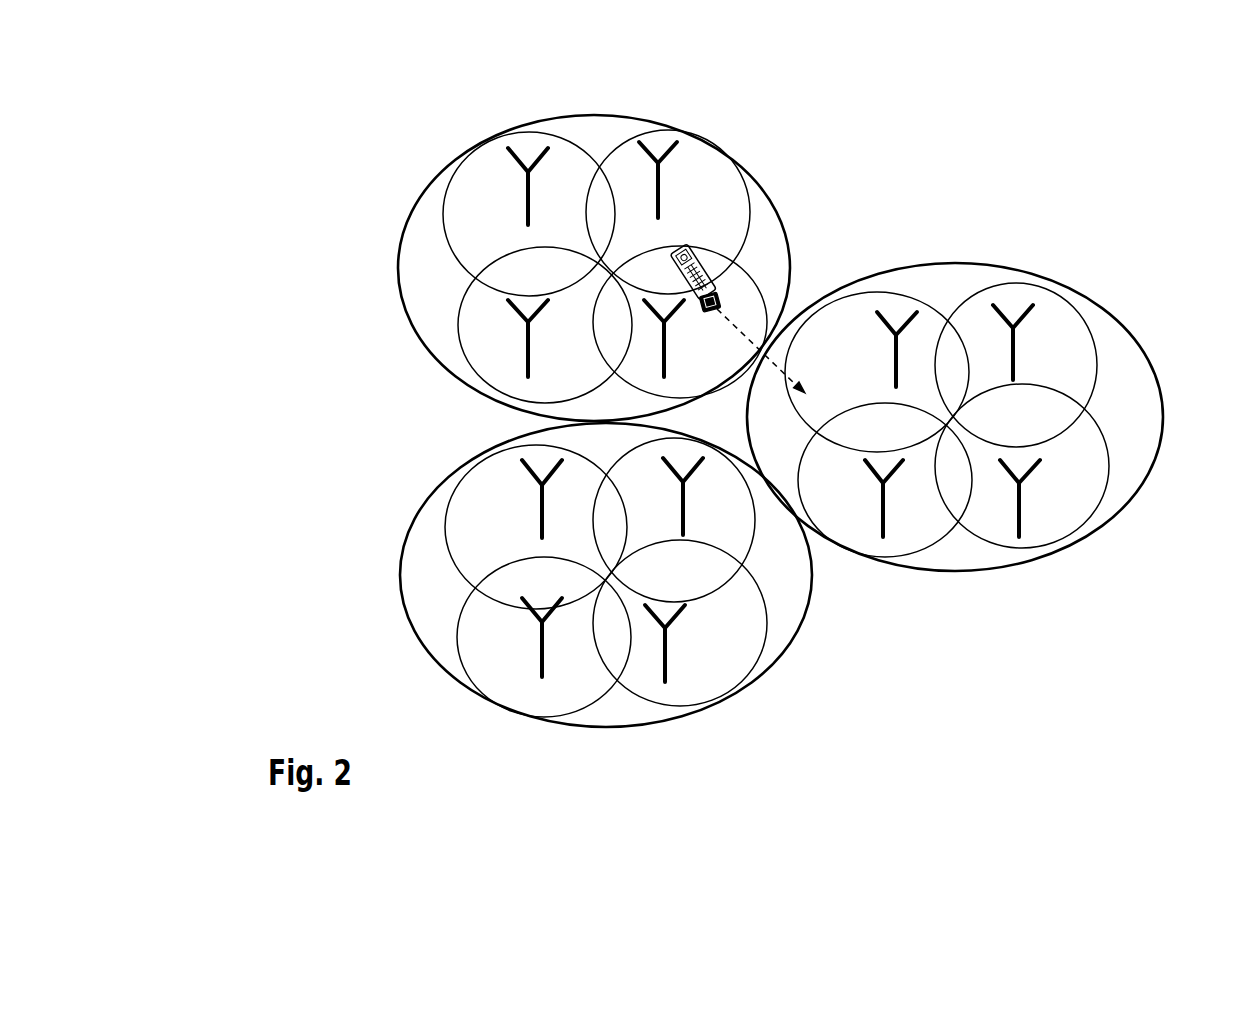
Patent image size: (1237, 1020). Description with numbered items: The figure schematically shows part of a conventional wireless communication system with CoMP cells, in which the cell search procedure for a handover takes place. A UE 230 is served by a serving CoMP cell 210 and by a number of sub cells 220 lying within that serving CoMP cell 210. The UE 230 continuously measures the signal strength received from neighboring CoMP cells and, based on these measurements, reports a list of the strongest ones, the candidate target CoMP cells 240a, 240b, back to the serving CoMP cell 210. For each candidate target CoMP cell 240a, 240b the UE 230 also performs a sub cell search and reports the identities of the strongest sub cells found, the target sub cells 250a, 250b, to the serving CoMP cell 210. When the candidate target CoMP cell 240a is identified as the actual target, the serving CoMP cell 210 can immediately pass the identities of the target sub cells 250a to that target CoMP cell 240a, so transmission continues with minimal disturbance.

The serving CoMP cell 210 is at (420, 260).
The sub cells 220 is at (747, 277).
The UE 230 is at (688, 250).
The candidate target CoMP cell 240a is at (1103, 337).
The candidate target CoMP cell 240b is at (432, 565).
The target sub cells 250a is at (828, 382).
The target sub cells 250b is at (723, 527).